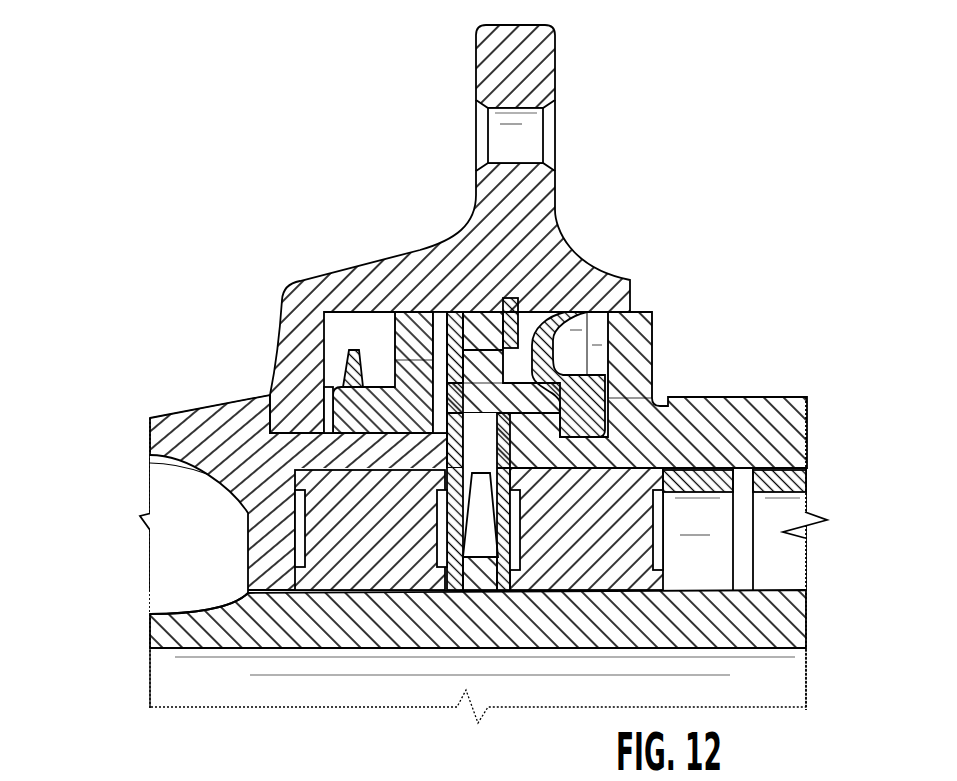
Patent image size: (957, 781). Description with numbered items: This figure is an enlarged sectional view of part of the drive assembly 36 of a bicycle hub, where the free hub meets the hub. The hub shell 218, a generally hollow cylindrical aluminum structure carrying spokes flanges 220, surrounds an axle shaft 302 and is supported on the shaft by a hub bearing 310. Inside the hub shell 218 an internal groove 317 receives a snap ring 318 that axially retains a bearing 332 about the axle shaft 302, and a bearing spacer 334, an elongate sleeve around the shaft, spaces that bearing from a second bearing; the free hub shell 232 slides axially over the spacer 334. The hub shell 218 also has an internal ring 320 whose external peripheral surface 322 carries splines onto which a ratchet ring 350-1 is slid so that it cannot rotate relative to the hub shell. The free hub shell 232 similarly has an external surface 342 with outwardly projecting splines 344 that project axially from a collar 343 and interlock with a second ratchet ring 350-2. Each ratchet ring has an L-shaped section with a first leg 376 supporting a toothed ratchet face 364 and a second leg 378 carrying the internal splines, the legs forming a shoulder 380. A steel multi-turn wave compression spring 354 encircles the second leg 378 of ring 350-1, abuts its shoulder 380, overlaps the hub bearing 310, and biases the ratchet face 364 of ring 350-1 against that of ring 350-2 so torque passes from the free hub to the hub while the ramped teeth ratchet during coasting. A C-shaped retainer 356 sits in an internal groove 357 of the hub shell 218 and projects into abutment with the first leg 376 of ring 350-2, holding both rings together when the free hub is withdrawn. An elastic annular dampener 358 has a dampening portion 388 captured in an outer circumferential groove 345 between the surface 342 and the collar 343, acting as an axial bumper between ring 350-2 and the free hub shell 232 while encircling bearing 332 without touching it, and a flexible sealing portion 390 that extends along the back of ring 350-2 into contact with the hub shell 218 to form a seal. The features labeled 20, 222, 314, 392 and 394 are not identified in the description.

The valve assembly 20 is at (155, 125).
The drive assembly 36 is at (262, 125).
The hub shell 218 is at (300, 280).
The spokes flanges 220 is at (545, 65).
The stem groove 222 is at (535, 115).
The free hub shell 232 is at (722, 395).
The axle shaft 302 is at (245, 592).
The hub bearing 310 is at (322, 466).
The seat region 314 is at (690, 393).
The internal groove 317 is at (520, 460).
The snap ring 318 is at (520, 490).
The internal ring 320 is at (297, 486).
The external peripheral surface 322 is at (320, 415).
The bearing 332 is at (673, 575).
The bearing spacer 334 is at (722, 480).
The external surface 342 is at (482, 440).
The collar 343 is at (635, 362).
The splines 344 is at (498, 440).
The outer circumferential groove 345 is at (827, 520).
The ratchet ring 350-1 is at (420, 313).
The ratchet ring 350-2 is at (483, 313).
The spring 354 is at (350, 372).
The retainer 356 is at (548, 303).
The internal groove 357 is at (513, 300).
The dampener 358 is at (583, 300).
The ratchet face 364 is at (438, 313).
The first leg 376 is at (392, 310).
The second leg 378 is at (335, 398).
The shoulder 380 is at (455, 333).
The dampening portion 388 is at (600, 420).
The sealing portion 390 is at (600, 338).
The gap 392 is at (690, 452).
The base plate 394 is at (285, 605).